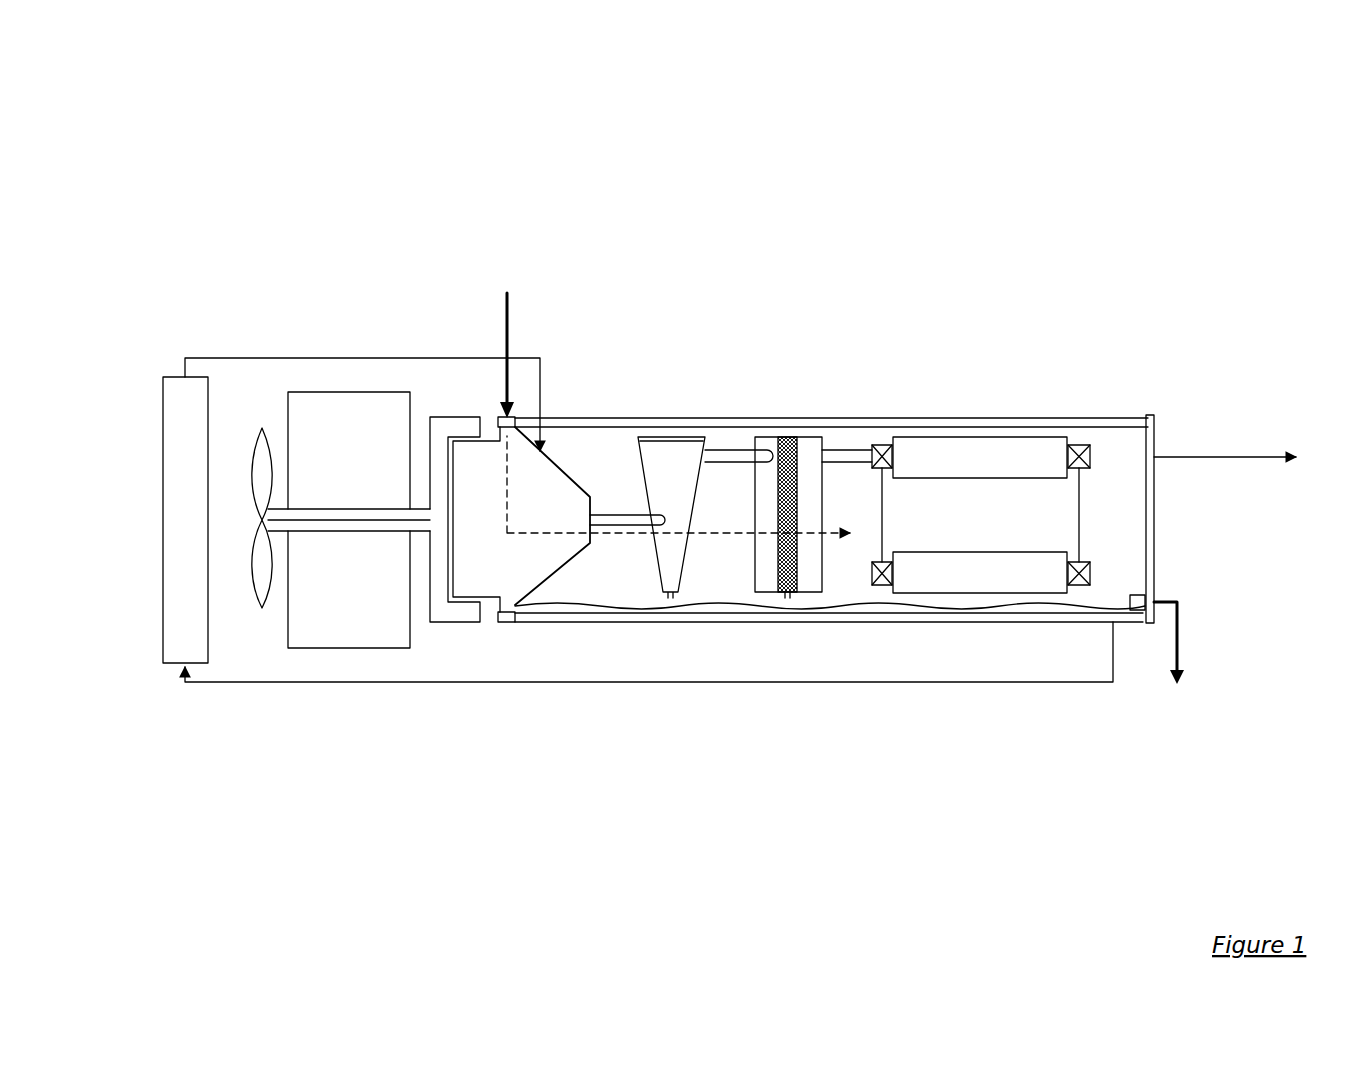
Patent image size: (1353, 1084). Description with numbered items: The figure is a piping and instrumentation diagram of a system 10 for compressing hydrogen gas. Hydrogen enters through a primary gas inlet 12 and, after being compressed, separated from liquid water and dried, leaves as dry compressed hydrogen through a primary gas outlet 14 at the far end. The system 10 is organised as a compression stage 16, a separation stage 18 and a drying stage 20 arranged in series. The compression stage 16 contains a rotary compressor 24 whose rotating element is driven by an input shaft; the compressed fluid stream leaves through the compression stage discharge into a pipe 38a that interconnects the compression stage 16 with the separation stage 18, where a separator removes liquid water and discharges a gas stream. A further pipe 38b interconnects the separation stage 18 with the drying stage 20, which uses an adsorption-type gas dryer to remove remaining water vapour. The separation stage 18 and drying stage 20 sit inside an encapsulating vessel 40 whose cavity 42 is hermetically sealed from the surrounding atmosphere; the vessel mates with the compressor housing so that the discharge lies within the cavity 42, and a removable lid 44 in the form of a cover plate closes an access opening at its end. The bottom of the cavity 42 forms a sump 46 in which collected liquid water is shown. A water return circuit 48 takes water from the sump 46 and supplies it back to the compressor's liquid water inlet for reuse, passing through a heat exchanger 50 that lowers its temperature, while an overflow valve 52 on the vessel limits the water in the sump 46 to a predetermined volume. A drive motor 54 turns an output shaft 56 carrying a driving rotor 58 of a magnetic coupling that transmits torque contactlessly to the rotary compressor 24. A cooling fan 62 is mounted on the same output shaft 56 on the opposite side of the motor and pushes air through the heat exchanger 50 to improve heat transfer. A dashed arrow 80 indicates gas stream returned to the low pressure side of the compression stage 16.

The system for compressing hydrogen gas 10 is at (1083, 236).
The primary gas inlet 12 is at (505, 310).
The primary gas outlet 14 is at (1240, 450).
The compression stage 16 is at (574, 461).
The separation stage 18 is at (728, 431).
The drying stage 20 is at (880, 438).
The rotary compressor 24 is at (500, 623).
The pipe 38a is at (625, 521).
The pipe 38b is at (838, 450).
The encapsulating vessel 40 is at (1058, 418).
The cavity 42 is at (1046, 513).
The removable lid 44 is at (1148, 443).
The sump 46 is at (565, 598).
The water return circuit 48 is at (207, 357).
The heat exchanger 50 is at (182, 583).
The overflow valve 52 is at (1143, 622).
The drive motor 54 is at (310, 650).
The output shaft 56 is at (413, 507).
The driving rotor 58 is at (443, 613).
The cooling fan 62 is at (263, 428).
The dashed arrow 80 is at (850, 534).